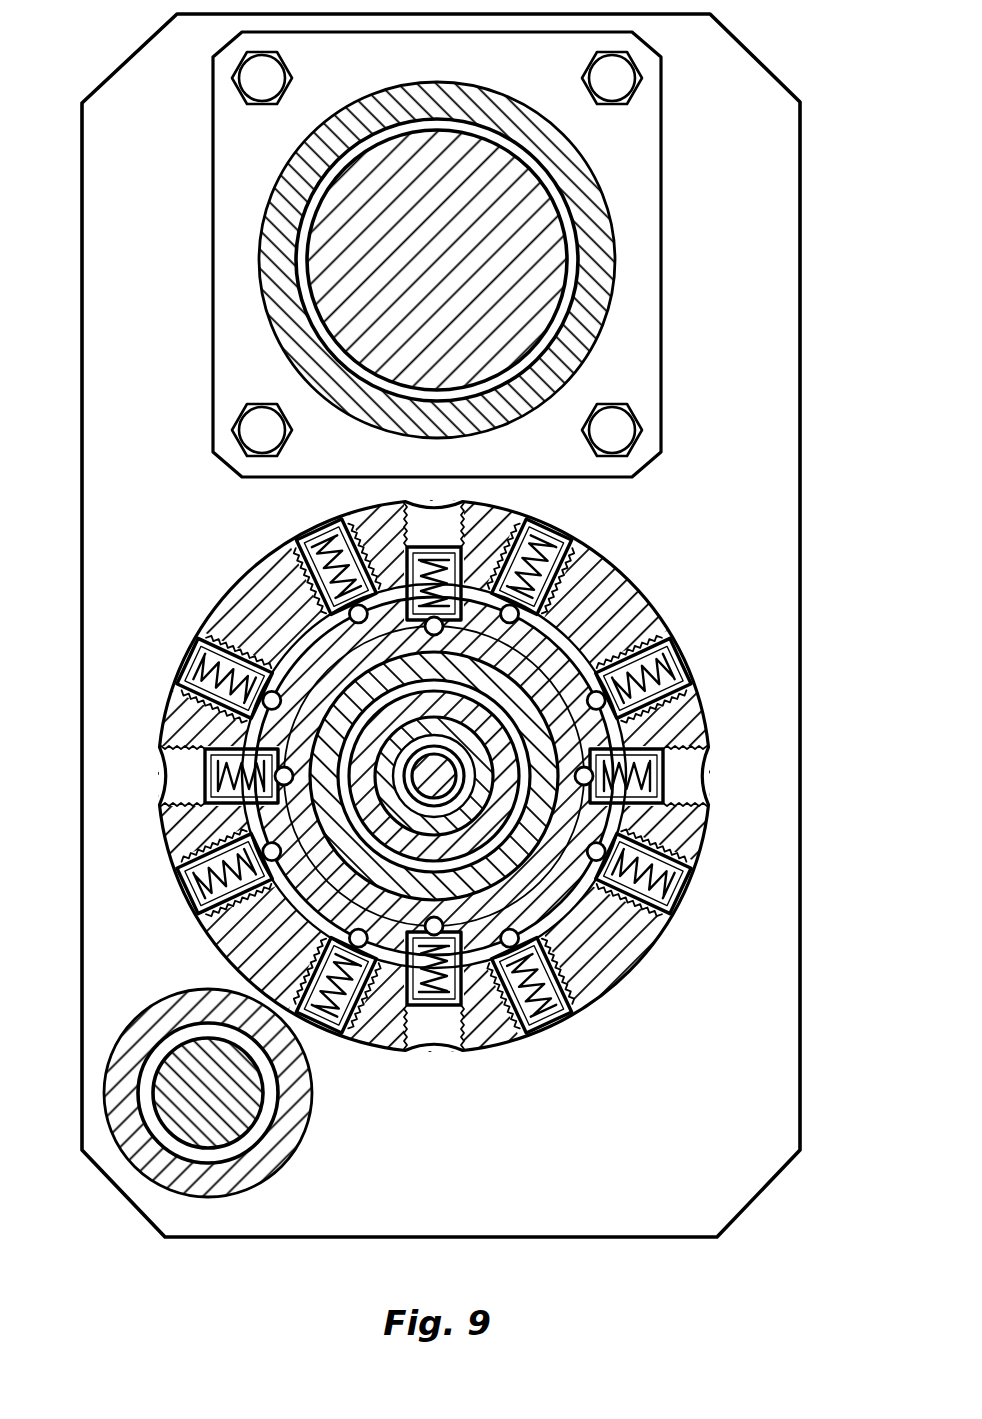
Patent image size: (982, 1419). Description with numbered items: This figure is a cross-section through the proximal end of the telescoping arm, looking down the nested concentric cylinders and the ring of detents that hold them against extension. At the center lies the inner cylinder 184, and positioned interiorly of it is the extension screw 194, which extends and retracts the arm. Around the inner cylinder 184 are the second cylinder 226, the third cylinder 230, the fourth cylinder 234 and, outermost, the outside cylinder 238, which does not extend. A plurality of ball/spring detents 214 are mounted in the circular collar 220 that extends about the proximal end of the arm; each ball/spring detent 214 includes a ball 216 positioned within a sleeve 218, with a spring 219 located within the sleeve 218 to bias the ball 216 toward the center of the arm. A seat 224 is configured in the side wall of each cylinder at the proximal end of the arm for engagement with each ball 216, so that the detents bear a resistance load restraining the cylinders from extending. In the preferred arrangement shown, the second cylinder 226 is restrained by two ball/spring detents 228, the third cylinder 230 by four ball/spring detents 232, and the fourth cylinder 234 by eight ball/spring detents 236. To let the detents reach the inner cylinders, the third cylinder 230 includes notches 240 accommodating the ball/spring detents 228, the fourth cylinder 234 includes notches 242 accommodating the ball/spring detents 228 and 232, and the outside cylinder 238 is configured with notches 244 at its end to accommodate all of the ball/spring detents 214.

The inner cylinder 184 is at (285, 950).
The extension screw 194 is at (585, 597).
The ball/spring detents 214 is at (622, 640).
The ball 216 is at (530, 1034).
The sleeve 218 is at (500, 1044).
The spring 219 is at (560, 985).
The circular collar 220 is at (670, 640).
The seat 224 is at (322, 1040).
The second cylinder 226 is at (300, 985).
The ball/spring detents 228 is at (262, 585).
The third cylinder 230 is at (600, 703).
The ball/spring detents 232 is at (437, 560).
The fourth cylinder 234 is at (248, 742).
The ball/spring detents 236 is at (332, 553).
The outside cylinder 238 is at (595, 900).
The notches 240 is at (222, 606).
The notches 242 is at (590, 930).
The notches 244 is at (206, 644).